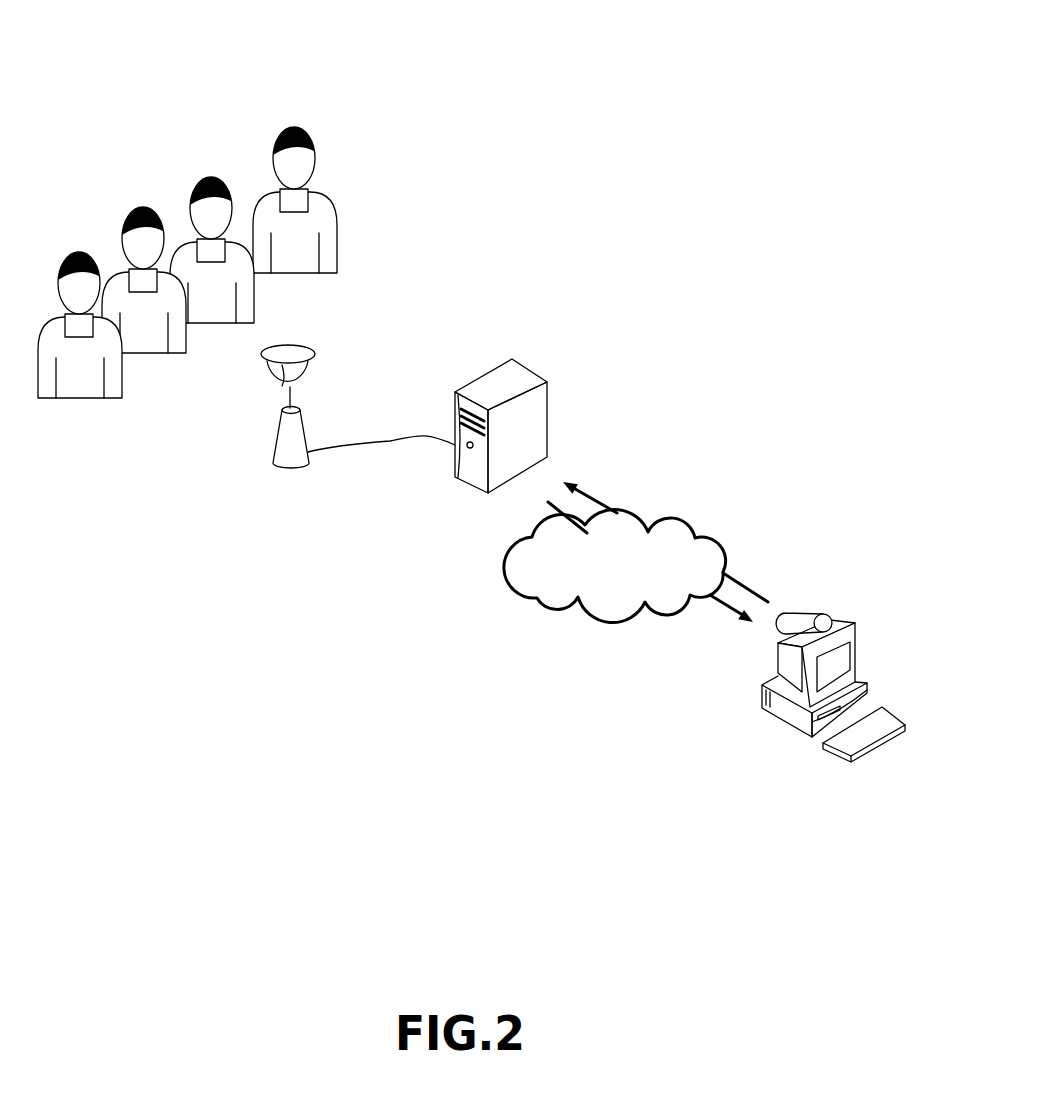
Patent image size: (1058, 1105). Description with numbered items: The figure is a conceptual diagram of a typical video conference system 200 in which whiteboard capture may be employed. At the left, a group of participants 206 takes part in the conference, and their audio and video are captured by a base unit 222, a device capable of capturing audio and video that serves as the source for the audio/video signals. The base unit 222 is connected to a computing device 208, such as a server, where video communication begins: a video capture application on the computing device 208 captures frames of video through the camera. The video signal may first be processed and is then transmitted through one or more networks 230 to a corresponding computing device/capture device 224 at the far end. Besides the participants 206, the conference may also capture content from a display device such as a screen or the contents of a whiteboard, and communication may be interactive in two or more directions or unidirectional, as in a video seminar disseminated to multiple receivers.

The video conference system 200 is at (622, 95).
The participants 206 is at (127, 202).
The computing device 208 is at (474, 374).
The base unit 222 is at (290, 480).
The networks 230 is at (506, 542).
The computing device/capture device 224 is at (822, 780).